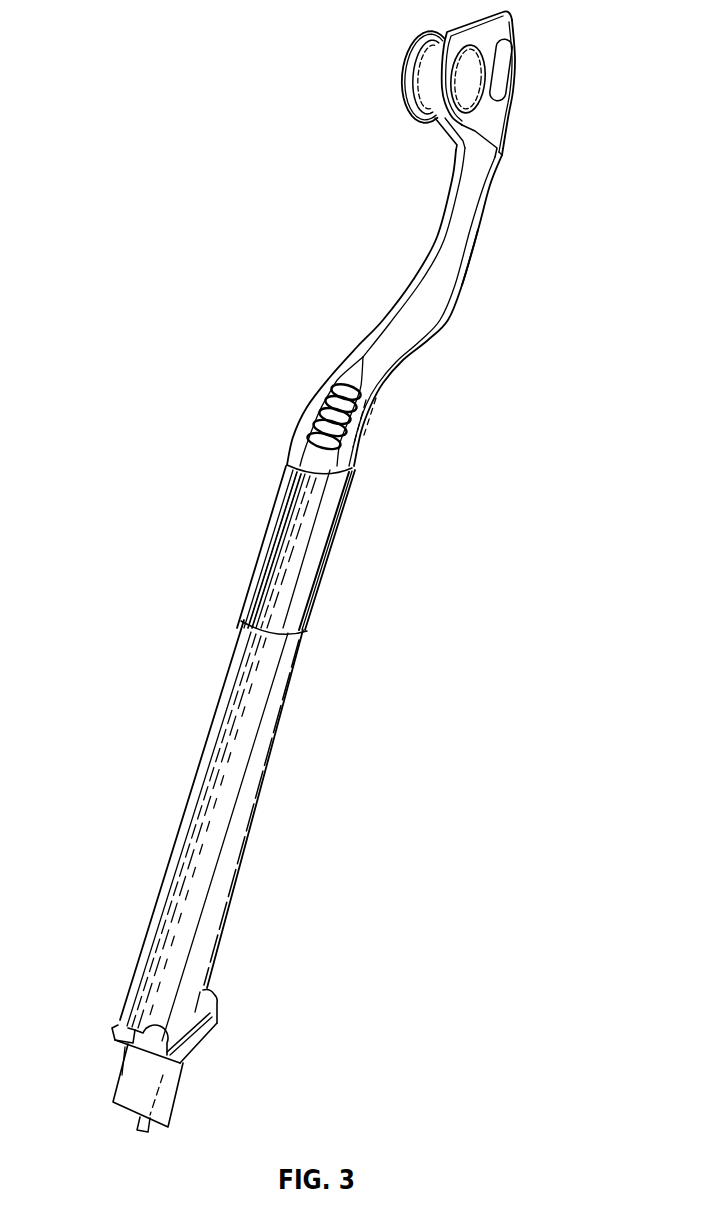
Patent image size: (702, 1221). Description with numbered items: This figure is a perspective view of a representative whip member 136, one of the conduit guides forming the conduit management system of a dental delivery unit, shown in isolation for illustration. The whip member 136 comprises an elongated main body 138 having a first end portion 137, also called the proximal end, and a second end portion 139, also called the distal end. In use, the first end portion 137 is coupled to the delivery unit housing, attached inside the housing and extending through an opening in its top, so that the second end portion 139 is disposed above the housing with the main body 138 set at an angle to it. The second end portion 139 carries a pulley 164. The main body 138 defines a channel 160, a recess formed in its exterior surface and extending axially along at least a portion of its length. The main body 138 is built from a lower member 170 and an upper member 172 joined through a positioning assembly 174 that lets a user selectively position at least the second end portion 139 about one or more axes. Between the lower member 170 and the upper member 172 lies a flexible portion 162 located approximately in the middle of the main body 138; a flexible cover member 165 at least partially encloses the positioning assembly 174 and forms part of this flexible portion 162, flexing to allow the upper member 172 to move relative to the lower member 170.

The whip member 136 is at (226, 504).
The first end portion 137 is at (128, 1075).
The main body 138 is at (318, 540).
The second end portion 139 is at (490, 190).
The channel 160 is at (235, 753).
The flexible portion 162 is at (278, 583).
The pulley 164 is at (410, 55).
The cover member 165 is at (276, 551).
The lower member 170 is at (253, 820).
The upper member 172 is at (462, 293).
The positioning assembly 174 is at (350, 583).